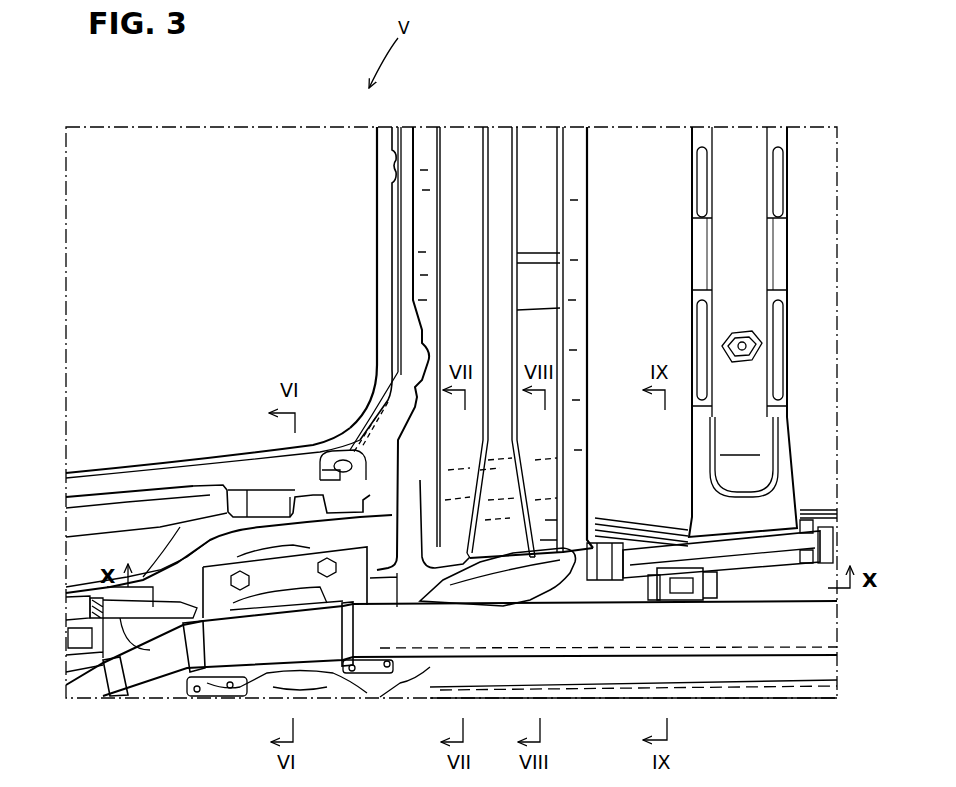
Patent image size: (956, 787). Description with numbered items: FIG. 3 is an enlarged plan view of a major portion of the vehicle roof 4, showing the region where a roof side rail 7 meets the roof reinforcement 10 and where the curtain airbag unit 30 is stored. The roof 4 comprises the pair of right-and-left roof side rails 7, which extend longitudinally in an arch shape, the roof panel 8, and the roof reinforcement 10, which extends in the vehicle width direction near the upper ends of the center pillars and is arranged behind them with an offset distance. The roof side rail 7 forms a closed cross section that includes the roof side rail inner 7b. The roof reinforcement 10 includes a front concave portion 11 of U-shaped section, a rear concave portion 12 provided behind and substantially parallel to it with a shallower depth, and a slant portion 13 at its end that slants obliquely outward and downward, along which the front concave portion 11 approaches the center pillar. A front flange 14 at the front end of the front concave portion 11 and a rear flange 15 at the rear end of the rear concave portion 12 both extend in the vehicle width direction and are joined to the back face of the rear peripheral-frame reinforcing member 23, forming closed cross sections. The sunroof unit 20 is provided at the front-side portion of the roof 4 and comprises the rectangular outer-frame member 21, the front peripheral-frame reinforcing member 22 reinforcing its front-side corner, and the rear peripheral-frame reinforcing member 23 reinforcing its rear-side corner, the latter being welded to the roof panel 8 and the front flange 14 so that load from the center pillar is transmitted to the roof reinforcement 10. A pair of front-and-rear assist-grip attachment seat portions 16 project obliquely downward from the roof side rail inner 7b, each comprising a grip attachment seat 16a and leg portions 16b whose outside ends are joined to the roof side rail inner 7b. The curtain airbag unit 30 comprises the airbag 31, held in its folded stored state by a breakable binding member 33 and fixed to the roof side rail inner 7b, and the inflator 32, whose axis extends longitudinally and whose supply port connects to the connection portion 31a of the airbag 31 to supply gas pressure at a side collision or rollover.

The roof 4 is at (806, 126).
The roof side rail 7 is at (778, 683).
The roof side rail inner 7b is at (705, 667).
The roof panel 8 is at (663, 150).
The roof reinforcement 10 is at (591, 139).
The front concave portion 11 is at (465, 185).
The rear concave portion 12 is at (537, 145).
The slant portion 13 is at (550, 483).
The front flange 14 is at (425, 228).
The rear flange 15 is at (575, 237).
The assist-grip attachment seat portion 16 is at (681, 566).
The grip attachment seat 16a is at (685, 596).
The leg portion 16b is at (650, 585).
The sunroof unit 20 is at (152, 464).
The outer-frame member 21 is at (250, 483).
The front peripheral-frame reinforcing member 22 is at (66, 606).
The rear peripheral-frame reinforcing member 23 is at (160, 590).
The curtain airbag unit 30 is at (583, 660).
The airbag 31 is at (428, 650).
The connection portion 31a is at (545, 585).
The inflator 32 is at (728, 548).
The binding member 33 is at (195, 648).